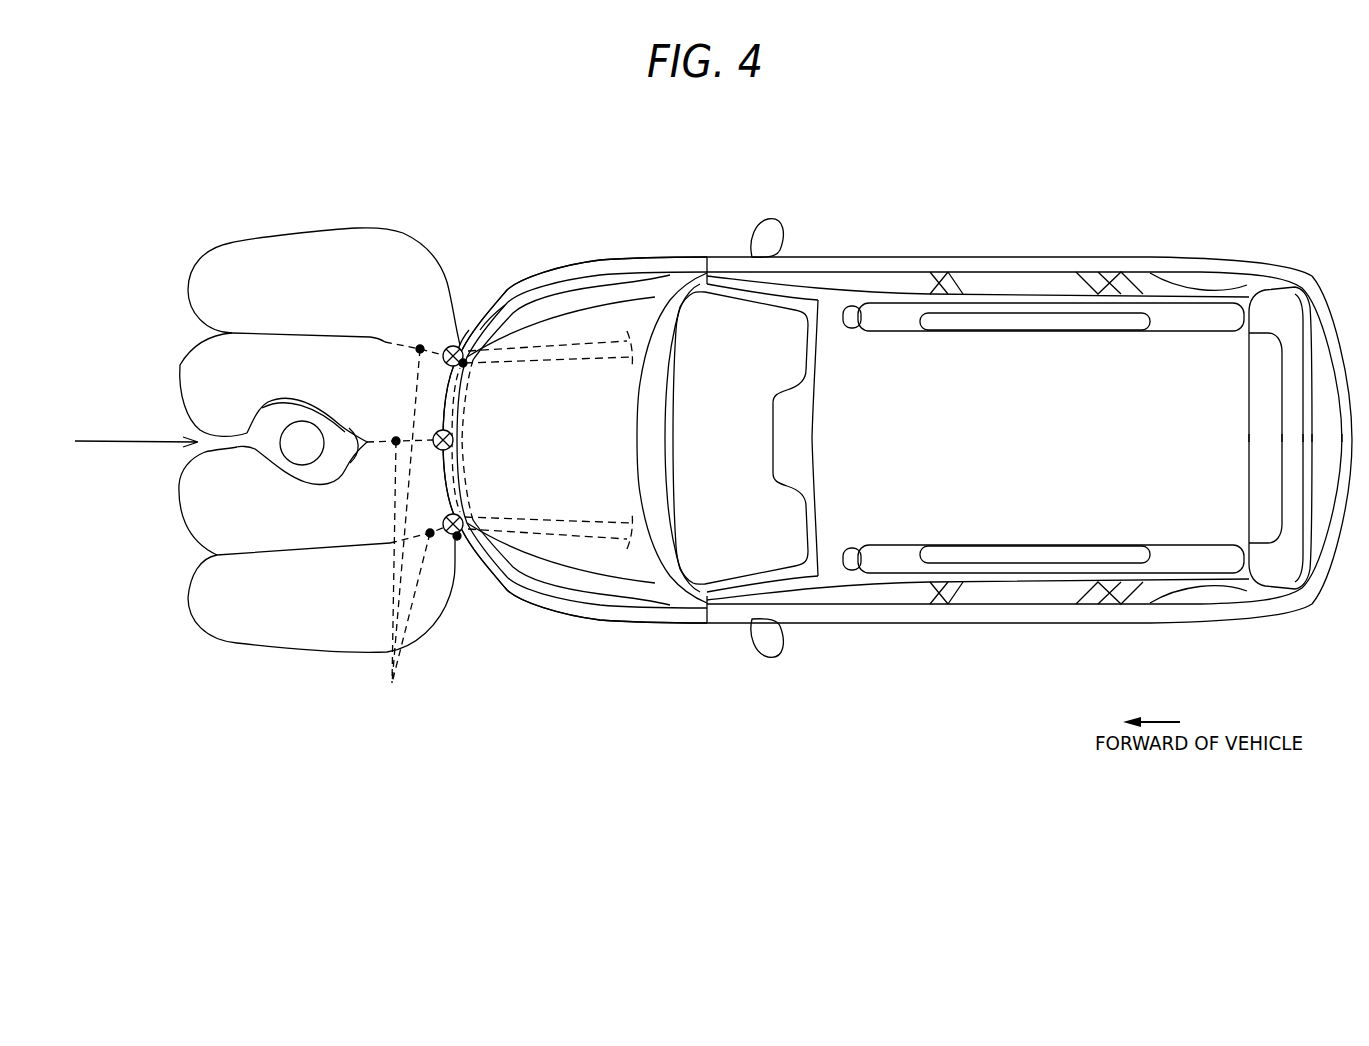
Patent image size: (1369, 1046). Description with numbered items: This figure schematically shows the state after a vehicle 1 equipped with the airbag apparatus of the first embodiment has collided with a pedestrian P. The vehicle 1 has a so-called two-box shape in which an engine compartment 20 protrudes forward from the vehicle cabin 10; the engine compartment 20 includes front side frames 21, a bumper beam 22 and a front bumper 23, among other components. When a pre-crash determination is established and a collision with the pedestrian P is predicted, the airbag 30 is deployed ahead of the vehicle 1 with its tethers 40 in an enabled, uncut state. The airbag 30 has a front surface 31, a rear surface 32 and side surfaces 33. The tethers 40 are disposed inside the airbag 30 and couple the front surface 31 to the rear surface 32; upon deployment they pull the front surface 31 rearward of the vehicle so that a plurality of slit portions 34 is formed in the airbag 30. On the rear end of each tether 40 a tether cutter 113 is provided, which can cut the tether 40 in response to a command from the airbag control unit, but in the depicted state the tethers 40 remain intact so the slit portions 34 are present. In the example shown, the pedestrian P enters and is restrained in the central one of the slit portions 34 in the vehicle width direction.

The vehicle 1 is at (889, 419).
The vehicle cabin 10 is at (1013, 234).
The engine compartment 20 is at (591, 237).
The front side frames 21 is at (607, 347).
The bumper beam 22 is at (490, 315).
The front bumper 23 is at (463, 338).
The tether cutter 113 is at (458, 535).
The airbag 30 is at (262, 419).
The front surface 31 is at (178, 365).
The rear surface 32 is at (455, 561).
The side surfaces 33 is at (327, 236).
The slit portions 34 is at (120, 440).
The pedestrian P is at (260, 443).
The tethers 40 is at (405, 531).